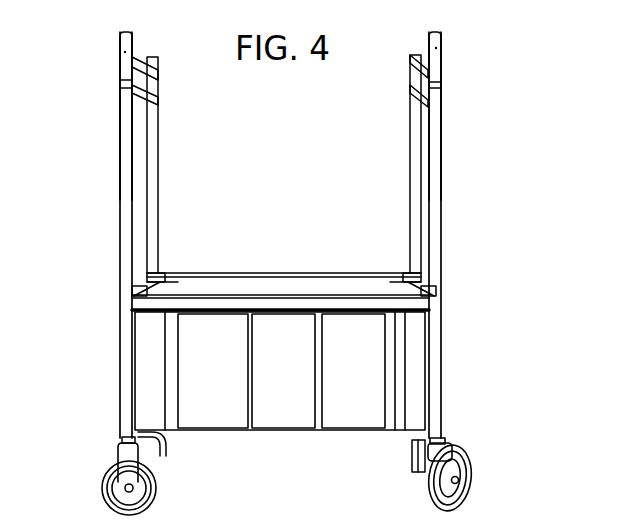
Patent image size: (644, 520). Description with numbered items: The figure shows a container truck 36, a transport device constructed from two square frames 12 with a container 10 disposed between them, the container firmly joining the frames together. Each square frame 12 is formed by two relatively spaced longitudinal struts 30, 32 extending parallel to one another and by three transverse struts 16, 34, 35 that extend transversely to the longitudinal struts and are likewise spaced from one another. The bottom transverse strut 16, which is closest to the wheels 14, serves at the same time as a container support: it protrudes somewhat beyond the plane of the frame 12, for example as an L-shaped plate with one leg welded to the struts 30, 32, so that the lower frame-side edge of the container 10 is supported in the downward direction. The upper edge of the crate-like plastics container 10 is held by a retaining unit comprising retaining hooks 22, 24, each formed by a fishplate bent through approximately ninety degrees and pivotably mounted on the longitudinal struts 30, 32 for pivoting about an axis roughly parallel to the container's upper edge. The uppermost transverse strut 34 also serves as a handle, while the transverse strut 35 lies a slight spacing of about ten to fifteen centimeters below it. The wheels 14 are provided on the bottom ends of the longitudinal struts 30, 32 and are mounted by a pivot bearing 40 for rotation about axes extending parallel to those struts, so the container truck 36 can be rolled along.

The container 10 is at (308, 273).
The square frame 12 is at (120, 197).
The wheels 14 is at (103, 488).
The bottom transverse strut 16 is at (152, 456).
The retaining hook 22 is at (134, 288).
The retaining hook 24 is at (160, 273).
The longitudinal strut 30 is at (121, 158).
The longitudinal strut 32 is at (155, 131).
The uppermost transverse strut 34 is at (150, 70).
The transverse strut 35 is at (151, 97).
The container truck 36 is at (272, 195).
The pivot bearing 40 is at (118, 437).